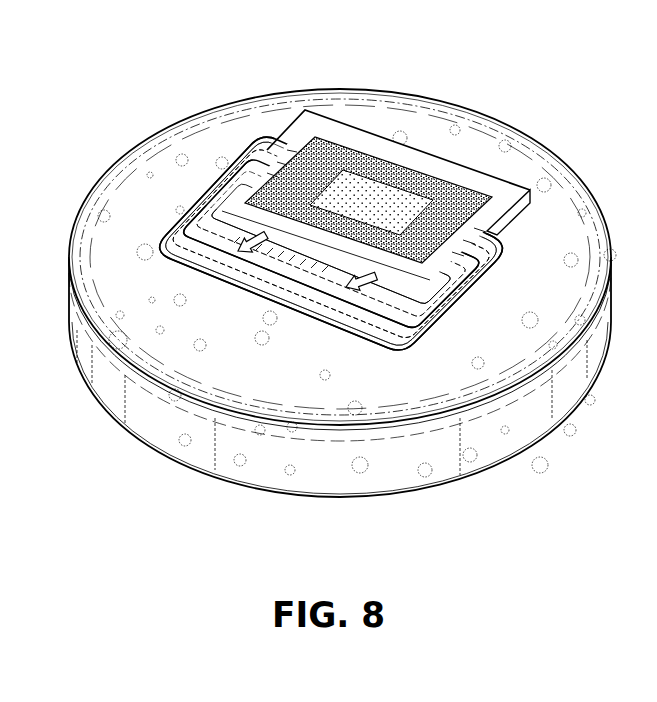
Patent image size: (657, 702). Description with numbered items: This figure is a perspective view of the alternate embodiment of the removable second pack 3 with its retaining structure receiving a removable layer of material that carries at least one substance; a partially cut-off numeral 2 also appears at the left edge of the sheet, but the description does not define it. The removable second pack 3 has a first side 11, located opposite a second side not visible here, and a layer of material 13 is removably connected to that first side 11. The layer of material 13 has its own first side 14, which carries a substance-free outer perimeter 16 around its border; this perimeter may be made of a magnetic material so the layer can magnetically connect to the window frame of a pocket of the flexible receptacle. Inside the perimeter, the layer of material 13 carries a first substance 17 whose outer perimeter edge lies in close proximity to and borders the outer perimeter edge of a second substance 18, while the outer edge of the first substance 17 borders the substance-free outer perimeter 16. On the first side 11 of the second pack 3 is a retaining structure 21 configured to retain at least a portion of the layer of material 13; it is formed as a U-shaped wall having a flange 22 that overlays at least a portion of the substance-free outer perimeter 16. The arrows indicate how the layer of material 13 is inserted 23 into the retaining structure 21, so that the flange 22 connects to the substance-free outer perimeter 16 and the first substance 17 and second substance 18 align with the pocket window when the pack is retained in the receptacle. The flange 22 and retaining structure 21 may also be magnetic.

The device 2 is at (2, 283).
The removable second pack 3 is at (342, 316).
The first side 11 is at (374, 445).
The layer of material 13 is at (367, 156).
The first side 14 is at (303, 127).
The substance-free outer perimeter 16 is at (368, 148).
The first substance 17 is at (478, 195).
The second substance 18 is at (387, 193).
The retaining structure 21 is at (153, 249).
The flange 22 is at (228, 163).
The inserted 23 is at (247, 247).